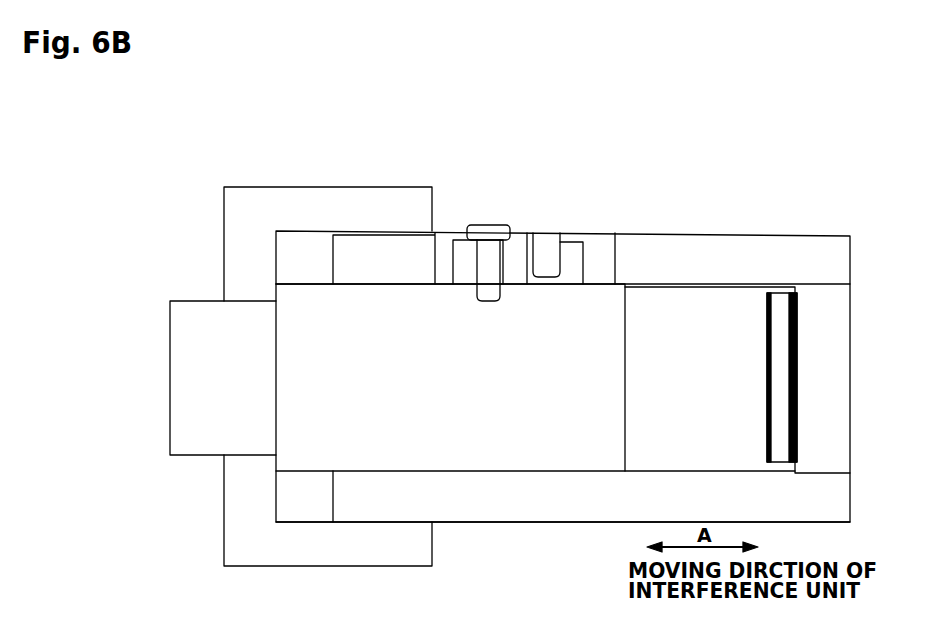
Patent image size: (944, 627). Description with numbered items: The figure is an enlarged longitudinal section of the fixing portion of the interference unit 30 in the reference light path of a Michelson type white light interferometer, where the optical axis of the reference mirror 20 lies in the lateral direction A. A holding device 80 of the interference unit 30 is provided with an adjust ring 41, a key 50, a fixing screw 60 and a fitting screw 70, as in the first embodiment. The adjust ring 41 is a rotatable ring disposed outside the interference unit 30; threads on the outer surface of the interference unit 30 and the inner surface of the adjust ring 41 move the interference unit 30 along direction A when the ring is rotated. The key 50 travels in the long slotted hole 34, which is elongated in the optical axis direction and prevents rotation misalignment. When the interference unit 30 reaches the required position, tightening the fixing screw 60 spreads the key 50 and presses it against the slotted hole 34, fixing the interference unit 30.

The reference mirror 20 is at (778, 380).
The interference unit 30 is at (493, 523).
The long slotted hole 34 is at (598, 252).
The adjust ring 41 is at (224, 217).
The key 50 is at (460, 233).
The fixing screw 60 is at (547, 232).
The fitting screw 70 is at (488, 225).
The holding device 80 is at (312, 303).